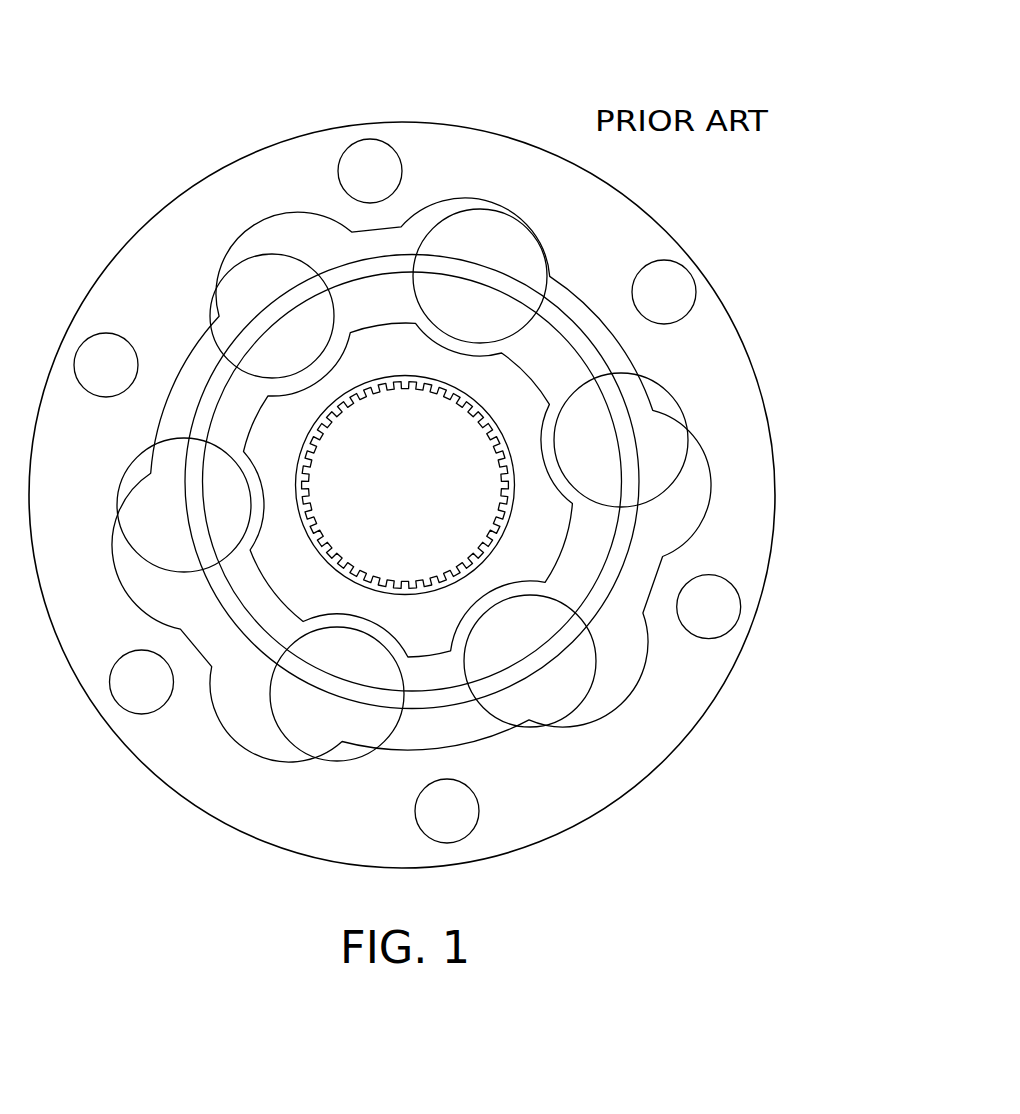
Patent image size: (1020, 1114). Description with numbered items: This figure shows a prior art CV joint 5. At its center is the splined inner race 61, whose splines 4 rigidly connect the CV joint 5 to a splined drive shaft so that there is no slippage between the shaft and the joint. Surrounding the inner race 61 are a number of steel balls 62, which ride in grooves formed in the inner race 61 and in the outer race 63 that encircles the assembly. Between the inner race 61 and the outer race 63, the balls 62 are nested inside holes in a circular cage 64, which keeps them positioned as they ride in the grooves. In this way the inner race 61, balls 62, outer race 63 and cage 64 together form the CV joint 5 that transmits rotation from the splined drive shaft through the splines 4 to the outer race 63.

The splines 4 is at (507, 516).
The CV joint 5 is at (458, 440).
The splined inner race 61 is at (390, 335).
The steel balls 62 is at (265, 275).
The outer race 63 is at (648, 227).
The circular cage 64 is at (615, 398).